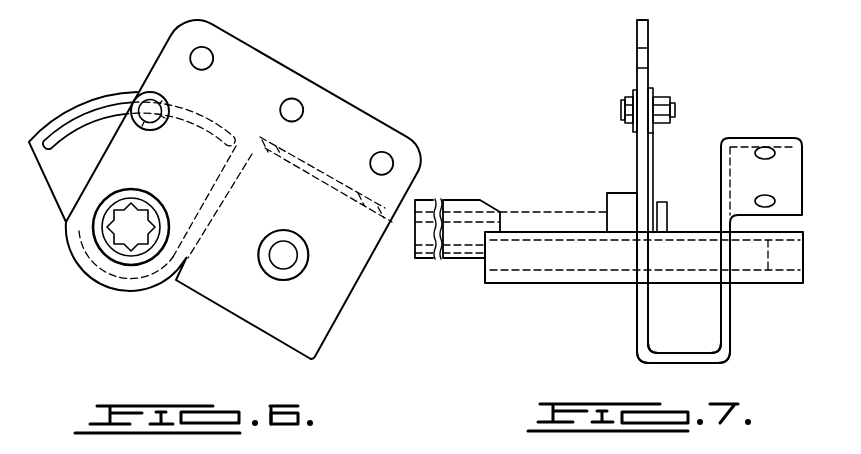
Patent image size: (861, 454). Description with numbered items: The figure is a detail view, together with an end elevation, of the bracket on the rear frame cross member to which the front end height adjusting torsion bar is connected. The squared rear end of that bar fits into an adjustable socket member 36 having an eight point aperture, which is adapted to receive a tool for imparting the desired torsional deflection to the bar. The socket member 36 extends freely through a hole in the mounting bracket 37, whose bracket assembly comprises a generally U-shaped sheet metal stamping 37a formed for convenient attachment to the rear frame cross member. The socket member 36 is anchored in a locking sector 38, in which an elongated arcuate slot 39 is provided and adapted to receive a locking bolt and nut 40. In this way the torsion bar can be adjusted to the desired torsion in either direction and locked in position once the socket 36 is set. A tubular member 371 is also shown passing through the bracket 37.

In FIG. 6, the adjustable socket member 36 is at (139, 249).
In FIG. 7, the adjustable socket member 36 is at (470, 199).
In FIG. 6, the mounting bracket 37 is at (268, 57).
In FIG. 7, the mounting bracket 37 is at (636, 174).
In FIG. 7, the U-shaped sheet metal stamping 37a is at (658, 363).
In FIG. 6, the locking sector 38 is at (74, 89).
In FIG. 7, the locking sector 38 is at (653, 157).
In FIG. 6, the elongated arcuate slot 39 is at (88, 117).
In FIG. 6, the locking bolt and nut 40 is at (147, 108).
In FIG. 7, the locking bolt and nut 40 is at (620, 108).
In FIG. 6, the cross tube 371 is at (298, 275).
In FIG. 7, the cross tube 371 is at (757, 280).